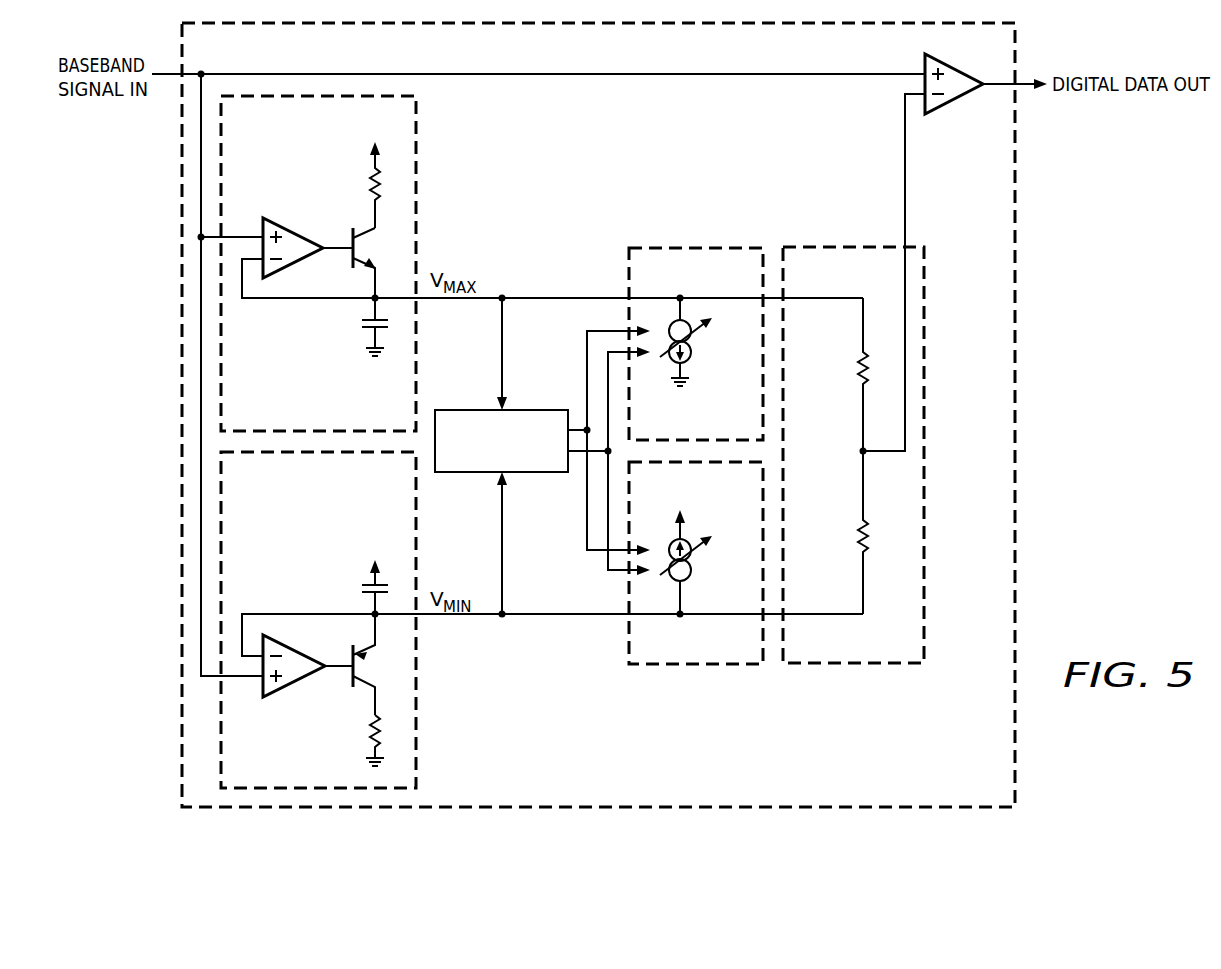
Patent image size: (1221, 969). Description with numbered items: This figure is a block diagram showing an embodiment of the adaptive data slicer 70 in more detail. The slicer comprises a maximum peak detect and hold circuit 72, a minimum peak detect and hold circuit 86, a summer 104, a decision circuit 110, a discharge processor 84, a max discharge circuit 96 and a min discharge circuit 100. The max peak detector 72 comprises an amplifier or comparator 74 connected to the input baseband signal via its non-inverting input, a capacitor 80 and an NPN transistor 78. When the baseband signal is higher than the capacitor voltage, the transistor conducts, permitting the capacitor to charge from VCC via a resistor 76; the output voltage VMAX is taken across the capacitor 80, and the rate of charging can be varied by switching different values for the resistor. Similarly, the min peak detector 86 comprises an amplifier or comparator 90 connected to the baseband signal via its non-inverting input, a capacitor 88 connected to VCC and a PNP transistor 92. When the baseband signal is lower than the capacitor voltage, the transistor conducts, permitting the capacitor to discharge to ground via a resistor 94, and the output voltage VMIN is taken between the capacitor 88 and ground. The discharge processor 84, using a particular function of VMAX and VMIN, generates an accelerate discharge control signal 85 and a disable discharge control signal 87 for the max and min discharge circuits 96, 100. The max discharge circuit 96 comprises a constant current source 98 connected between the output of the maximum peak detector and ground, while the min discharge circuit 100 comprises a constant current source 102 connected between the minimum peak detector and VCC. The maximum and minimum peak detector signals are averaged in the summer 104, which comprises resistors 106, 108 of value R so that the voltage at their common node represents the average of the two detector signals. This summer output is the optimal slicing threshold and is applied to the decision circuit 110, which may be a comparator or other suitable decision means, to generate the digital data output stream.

The adaptive data slicer 70 is at (158, 511).
The maximum peak detect and hold circuit 72 is at (417, 163).
The amplifier or comparator 74 is at (293, 229).
The resistor 76 is at (370, 183).
The NPN transistor 78 is at (348, 268).
The capacitor 80 is at (360, 325).
The discharge processor 84 is at (470, 408).
The accelerate discharge control signal 85 is at (585, 360).
The minimum peak detect and hold circuit 86 is at (417, 708).
The disable discharge control signal 87 is at (605, 562).
The capacitor 88 is at (360, 589).
The amplifier or comparator 90 is at (295, 683).
The PNP transistor 92 is at (350, 645).
The resistor 94 is at (369, 733).
The max discharge circuit 96 is at (695, 247).
The constant current source 98 is at (692, 356).
The min discharge circuit 100 is at (693, 665).
The constant current source 102 is at (692, 575).
The summer 104 is at (862, 665).
The resistor 106 is at (858, 366).
The resistor 108 is at (858, 534).
The decision circuit 110 is at (953, 101).